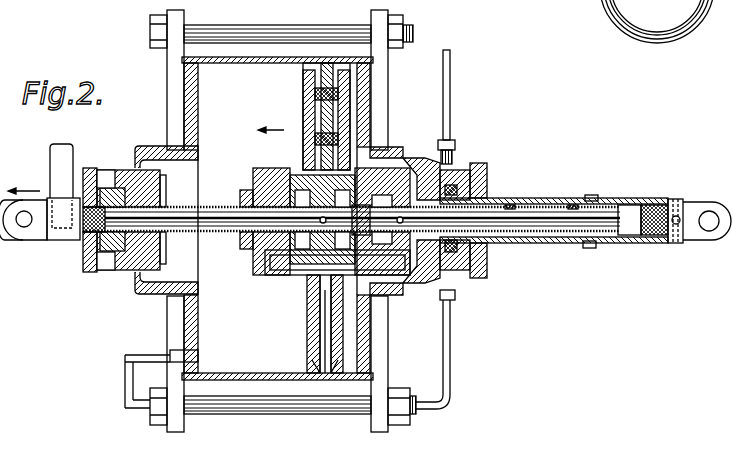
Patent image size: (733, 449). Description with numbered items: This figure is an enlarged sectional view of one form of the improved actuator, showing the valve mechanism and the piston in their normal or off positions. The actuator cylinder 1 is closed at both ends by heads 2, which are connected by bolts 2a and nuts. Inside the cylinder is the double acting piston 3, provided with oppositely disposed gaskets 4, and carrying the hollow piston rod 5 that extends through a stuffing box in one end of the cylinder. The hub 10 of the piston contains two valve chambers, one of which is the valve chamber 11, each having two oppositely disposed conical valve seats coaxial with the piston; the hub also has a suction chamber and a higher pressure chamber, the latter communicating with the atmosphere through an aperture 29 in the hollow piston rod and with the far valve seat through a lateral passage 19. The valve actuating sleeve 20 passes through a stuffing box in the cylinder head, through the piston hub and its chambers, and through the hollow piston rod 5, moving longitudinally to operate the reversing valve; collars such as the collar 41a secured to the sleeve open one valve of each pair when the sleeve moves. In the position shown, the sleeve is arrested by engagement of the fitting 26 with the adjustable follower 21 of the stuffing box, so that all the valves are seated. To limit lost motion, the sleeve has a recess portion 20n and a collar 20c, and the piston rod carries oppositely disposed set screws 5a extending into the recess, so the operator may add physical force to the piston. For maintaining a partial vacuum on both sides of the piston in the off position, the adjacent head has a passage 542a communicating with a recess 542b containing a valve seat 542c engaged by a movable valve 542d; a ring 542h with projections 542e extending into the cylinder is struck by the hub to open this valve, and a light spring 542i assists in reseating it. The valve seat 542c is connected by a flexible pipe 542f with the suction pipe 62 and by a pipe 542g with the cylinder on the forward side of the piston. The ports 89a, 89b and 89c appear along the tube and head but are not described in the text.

The actuator cylinder 1 is at (232, 58).
The heads 2 is at (182, 104).
The bolts 2a is at (318, 34).
The double acting piston 3 is at (310, 308).
The gaskets 4 is at (328, 376).
The collar 41a is at (291, 441).
The hollow piston rod 5 is at (542, 206).
The set screws 5a is at (590, 196).
The hub 10 is at (258, 170).
The valve chamber 11 is at (290, 176).
The lateral passage 19 is at (285, 270).
The valve actuating sleeve 20 is at (225, 233).
The collar 20c is at (612, 206).
The recess portion 20n is at (606, 240).
The adjustable follower 21 is at (95, 260).
The fitting 26 is at (62, 240).
The aperture 29 is at (676, 226).
The suction pipe 62 is at (66, 162).
The port 89a is at (508, 205).
The port 89b is at (412, 198).
The port 89c is at (570, 204).
The passage 542a is at (447, 142).
The recess 542b is at (468, 160).
The valve seat 542c is at (456, 285).
The movable valve 542d is at (488, 172).
The projections 542e is at (406, 300).
The flexible pipe 542f is at (449, 84).
The pipe 542g is at (450, 372).
The ring 542h is at (426, 294).
The light spring 542i is at (480, 252).